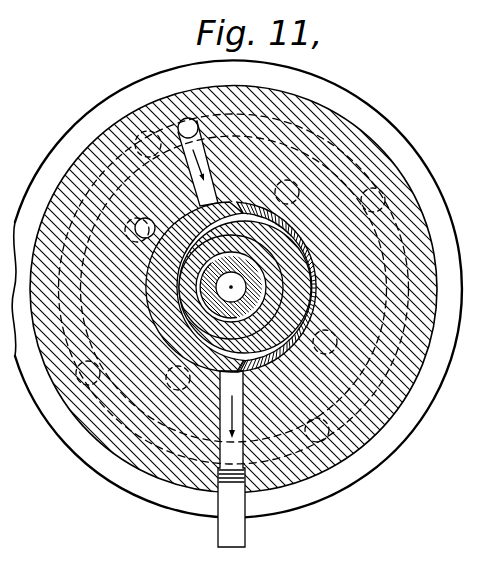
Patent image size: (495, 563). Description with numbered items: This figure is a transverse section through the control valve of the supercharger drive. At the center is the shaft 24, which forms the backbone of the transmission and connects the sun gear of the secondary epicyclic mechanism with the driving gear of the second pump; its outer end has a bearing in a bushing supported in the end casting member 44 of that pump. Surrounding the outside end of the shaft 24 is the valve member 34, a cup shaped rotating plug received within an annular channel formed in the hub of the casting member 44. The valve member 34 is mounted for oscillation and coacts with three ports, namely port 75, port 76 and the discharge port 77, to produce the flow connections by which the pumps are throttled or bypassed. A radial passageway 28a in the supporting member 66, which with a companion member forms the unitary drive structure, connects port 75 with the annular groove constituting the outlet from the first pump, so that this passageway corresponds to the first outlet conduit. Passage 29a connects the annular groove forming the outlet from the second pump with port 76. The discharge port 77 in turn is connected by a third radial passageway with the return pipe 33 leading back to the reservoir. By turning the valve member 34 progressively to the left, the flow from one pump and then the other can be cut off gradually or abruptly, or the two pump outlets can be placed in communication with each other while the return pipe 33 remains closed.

The supporting member 66 is at (338, 462).
The port 76 is at (155, 212).
The radial passageway 28a is at (165, 232).
The passage 29a is at (157, 218).
The return pipe 33 is at (246, 517).
The port 75 is at (219, 214).
The end casting member 44 is at (298, 313).
The valve member 34 is at (296, 270).
The shaft 24 is at (254, 296).
The discharge port 77 is at (221, 374).